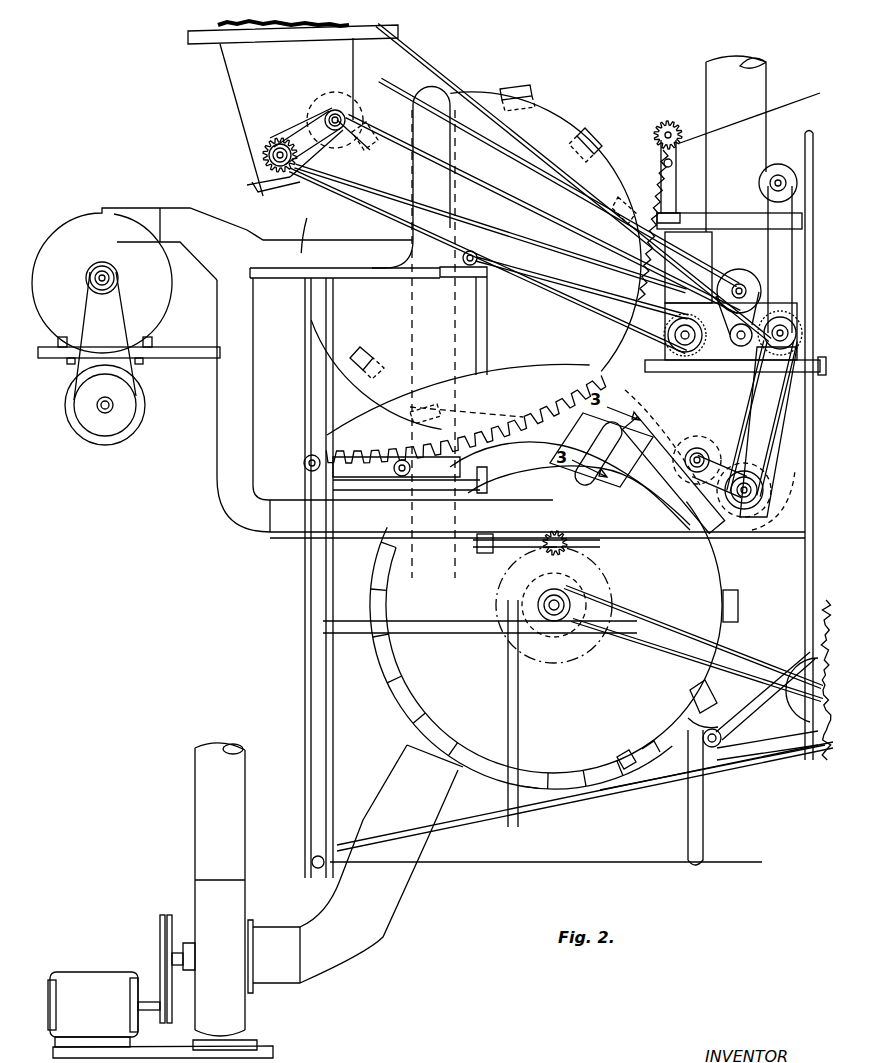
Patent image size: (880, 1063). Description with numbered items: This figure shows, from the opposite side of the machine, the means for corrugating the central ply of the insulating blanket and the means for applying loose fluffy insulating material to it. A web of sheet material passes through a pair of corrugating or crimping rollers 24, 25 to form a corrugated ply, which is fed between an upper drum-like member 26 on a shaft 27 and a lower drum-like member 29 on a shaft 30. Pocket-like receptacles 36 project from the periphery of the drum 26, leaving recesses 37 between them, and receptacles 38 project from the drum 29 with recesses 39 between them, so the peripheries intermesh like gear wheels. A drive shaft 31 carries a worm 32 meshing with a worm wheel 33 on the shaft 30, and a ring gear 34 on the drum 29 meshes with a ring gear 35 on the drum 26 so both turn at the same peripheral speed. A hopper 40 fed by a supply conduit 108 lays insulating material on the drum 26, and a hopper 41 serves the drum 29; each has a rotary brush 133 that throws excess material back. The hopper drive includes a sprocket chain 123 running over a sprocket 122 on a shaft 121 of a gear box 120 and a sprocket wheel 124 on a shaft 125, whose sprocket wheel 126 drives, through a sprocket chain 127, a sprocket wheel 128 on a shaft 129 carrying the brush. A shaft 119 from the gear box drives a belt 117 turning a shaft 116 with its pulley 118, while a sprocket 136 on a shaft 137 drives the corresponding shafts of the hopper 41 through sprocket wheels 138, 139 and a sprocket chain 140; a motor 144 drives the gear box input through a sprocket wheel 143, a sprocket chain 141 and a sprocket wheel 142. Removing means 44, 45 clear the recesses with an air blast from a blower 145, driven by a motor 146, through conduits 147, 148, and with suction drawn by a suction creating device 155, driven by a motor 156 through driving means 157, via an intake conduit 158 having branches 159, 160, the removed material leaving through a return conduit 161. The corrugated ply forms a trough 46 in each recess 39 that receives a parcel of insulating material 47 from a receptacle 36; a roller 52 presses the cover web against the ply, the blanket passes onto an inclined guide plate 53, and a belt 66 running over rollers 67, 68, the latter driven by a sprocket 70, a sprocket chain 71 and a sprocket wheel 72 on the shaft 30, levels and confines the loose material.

The hopper 40 is at (236, 80).
The rotary brush-like member 133 is at (324, 96).
The sprocket chain 127 is at (303, 116).
The sprocket wheel 126 is at (256, 138).
The shaft 125 is at (265, 156).
The sprocket wheel 124 is at (273, 193).
The sprocket wheel 128 is at (365, 145).
The shaft 129 is at (346, 118).
The blower 145 is at (80, 216).
The motor 146 is at (110, 430).
The conduit 147 is at (348, 268).
The receptacles or forms of pocket-like character 36 is at (526, 88).
The loose fill insulating material 47 is at (418, 452).
The roller 52 is at (392, 475).
The conduit 148 is at (293, 534).
The transverse trough 46 is at (379, 558).
The recesses or spaces 39 is at (712, 715).
The branch 159 is at (392, 632).
The return conduit 161 is at (206, 794).
The blower-like suction creating device 155 is at (193, 890).
The driving means 157 is at (158, 922).
The motor 156 is at (84, 974).
The intake conduit 158 is at (368, 948).
The removing means 44 is at (474, 72).
The upper drum-like or wheel-like member 26 is at (555, 105).
The recesses or spaces 37 is at (620, 170).
The corrugating or crimping roller 24 is at (660, 128).
The corrugating or crimping roller 25 is at (656, 152).
The supply conduit 108 is at (752, 90).
The motor 144 is at (766, 168).
The sprocket wheel 143 is at (782, 158).
The sprocket chain 141 is at (716, 210).
The pulley 118 is at (714, 230).
The shaft 116 is at (730, 268).
The sprocket chain 137 is at (772, 294).
The shaft 27 is at (476, 250).
The belt 117 is at (470, 198).
The sprocket 122 is at (630, 246).
The sprocket chain 123 is at (519, 274).
The shaft 121 is at (618, 286).
The gear box 120 is at (618, 335).
The ring gear 34 is at (558, 402).
The ring gear 35 is at (486, 414).
The shaft 119 is at (668, 378).
The sprocket wheel 142 is at (733, 359).
The sprocket 136 is at (779, 352).
The removing means 45 is at (632, 460).
The sprocket chain 140 is at (670, 496).
The sprocket wheel 139 is at (694, 513).
The sprocket wheel 138 is at (710, 527).
The hopper 41 is at (770, 450).
The worm 32 is at (540, 539).
The worm wheel 33 is at (584, 544).
The drive shaft 31 is at (673, 535).
The lower drum-like or wheel-like member 29 is at (696, 574).
The receptacles or forms 38 is at (738, 593).
The shaft 30 is at (570, 596).
The sprocket wheel 72 is at (622, 592).
The sprocket chain 71 is at (646, 660).
The branch 160 is at (534, 670).
The sprocket 70 is at (811, 644).
The roller 68 is at (806, 657).
The roller 67 is at (726, 732).
The guide plate or guideway 53 is at (471, 833).
The belt 66 is at (754, 760).